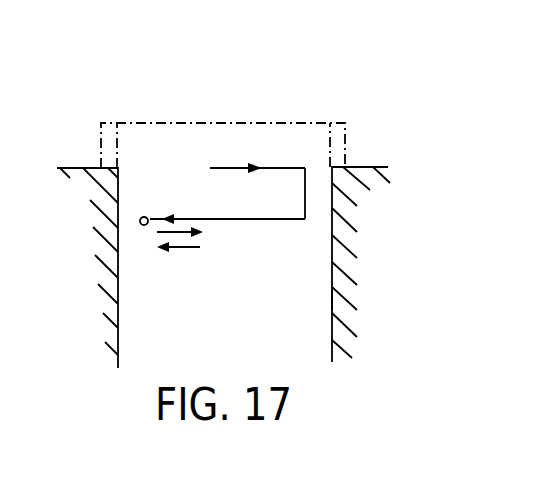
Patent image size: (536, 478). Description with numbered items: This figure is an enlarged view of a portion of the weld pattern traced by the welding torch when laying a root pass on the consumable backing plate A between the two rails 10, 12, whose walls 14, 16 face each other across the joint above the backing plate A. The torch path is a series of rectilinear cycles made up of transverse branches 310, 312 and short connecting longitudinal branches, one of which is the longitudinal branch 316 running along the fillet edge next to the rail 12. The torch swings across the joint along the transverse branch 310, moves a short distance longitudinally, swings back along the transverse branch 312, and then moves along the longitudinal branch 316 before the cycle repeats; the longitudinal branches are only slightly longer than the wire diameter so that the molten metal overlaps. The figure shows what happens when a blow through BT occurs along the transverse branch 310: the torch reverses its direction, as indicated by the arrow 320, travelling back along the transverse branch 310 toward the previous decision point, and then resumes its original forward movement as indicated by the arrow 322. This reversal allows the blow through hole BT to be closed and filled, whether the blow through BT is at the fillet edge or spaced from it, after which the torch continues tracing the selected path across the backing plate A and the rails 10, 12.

The rail 10 is at (215, 229).
The rail 12 is at (331, 335).
The left wall 14 is at (119, 320).
The inner surface of right wall 16 is at (332, 300).
The transverse branch 310 is at (278, 173).
The transverse branch 312 is at (270, 168).
The longitudinal branch 316 is at (322, 166).
The arrow 320 is at (178, 233).
The arrow 322 is at (187, 247).
The blow through BT is at (147, 214).
The consumable backing plate A is at (169, 121).